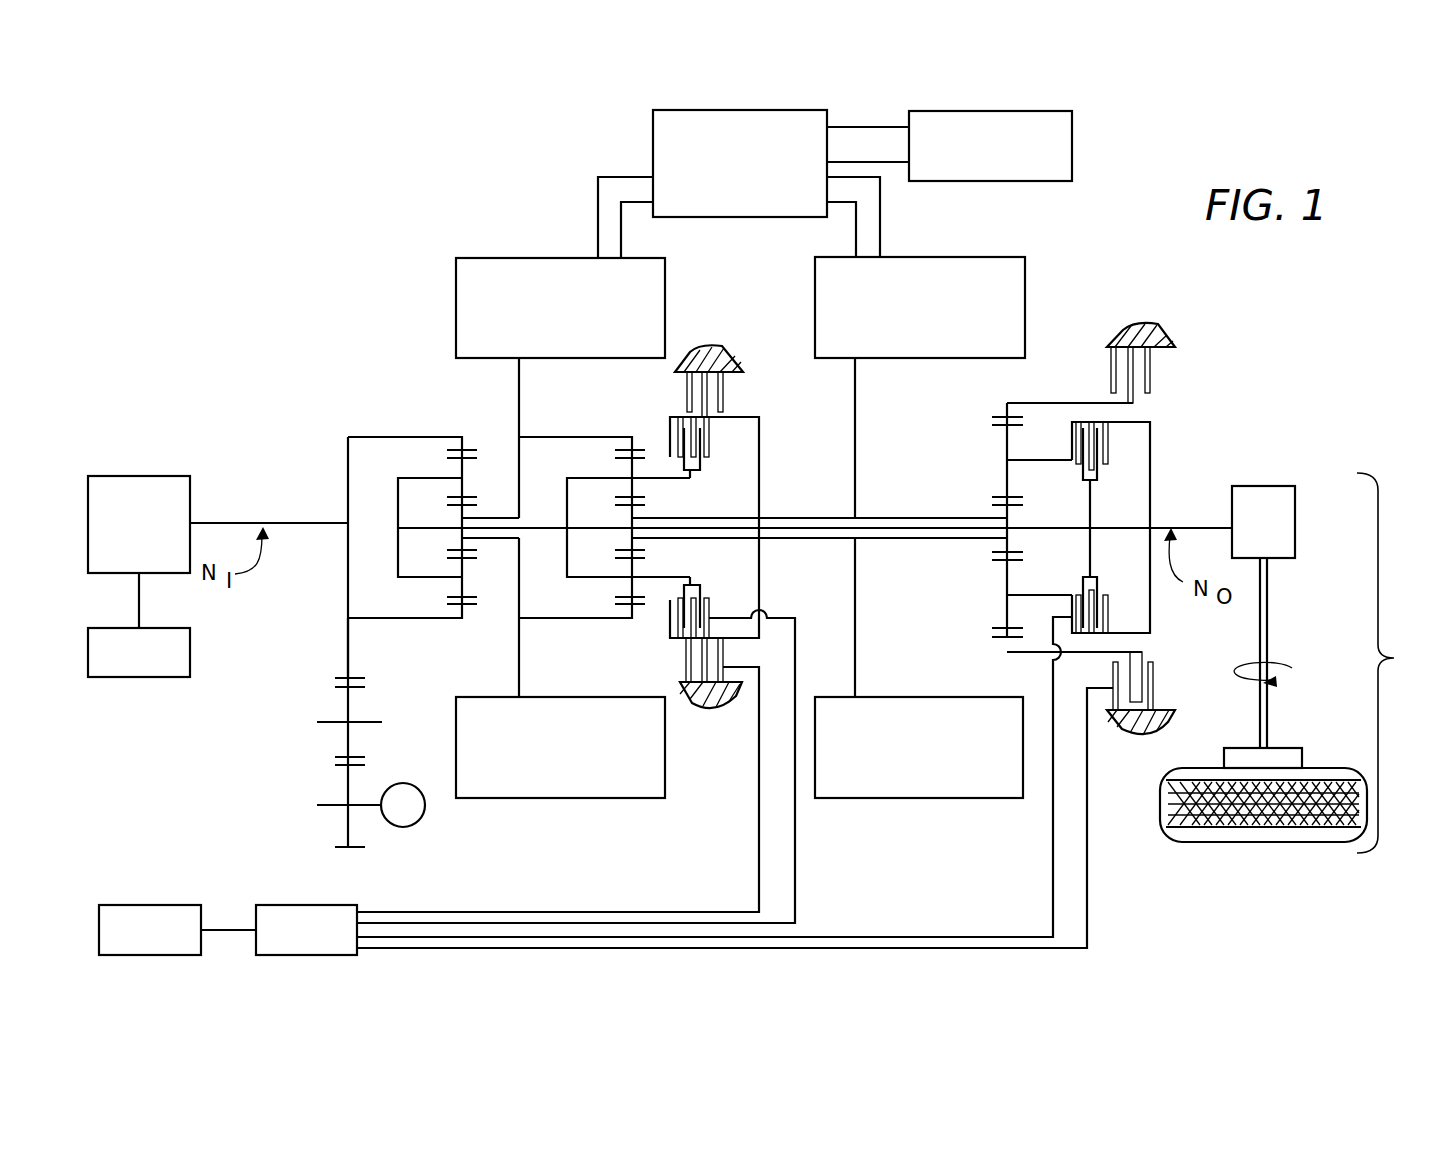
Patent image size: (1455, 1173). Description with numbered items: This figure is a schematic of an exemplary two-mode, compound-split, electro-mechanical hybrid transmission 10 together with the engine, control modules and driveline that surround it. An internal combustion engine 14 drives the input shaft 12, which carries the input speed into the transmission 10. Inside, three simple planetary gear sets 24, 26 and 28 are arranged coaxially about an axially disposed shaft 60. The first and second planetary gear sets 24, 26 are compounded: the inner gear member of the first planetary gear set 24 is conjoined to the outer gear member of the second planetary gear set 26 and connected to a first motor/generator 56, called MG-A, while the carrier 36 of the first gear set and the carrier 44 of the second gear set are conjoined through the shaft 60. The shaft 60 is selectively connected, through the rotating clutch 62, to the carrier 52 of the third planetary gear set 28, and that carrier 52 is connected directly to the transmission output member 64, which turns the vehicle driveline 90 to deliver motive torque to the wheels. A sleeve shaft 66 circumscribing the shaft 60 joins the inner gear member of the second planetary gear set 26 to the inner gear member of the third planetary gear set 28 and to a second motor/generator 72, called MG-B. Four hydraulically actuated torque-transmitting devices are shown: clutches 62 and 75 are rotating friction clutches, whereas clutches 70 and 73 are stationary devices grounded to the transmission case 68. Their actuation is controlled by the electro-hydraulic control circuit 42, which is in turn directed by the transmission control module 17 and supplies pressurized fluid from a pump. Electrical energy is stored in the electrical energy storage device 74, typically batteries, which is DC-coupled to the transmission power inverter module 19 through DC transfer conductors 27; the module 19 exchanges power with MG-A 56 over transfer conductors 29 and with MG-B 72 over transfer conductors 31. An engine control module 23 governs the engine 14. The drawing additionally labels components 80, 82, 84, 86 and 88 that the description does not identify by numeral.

The transmission 10 is at (406, 212).
The input shaft 12 is at (307, 523).
The engine 14 is at (145, 476).
The transmission control module 17 is at (140, 905).
The transmission power inverter module 19 is at (653, 126).
The engine control module 23 is at (185, 668).
The first planetary gear set 24 is at (455, 422).
The second planetary gear set 26 is at (627, 422).
The DC transfer conductors 27 is at (840, 127).
The third planetary gear set 28 is at (994, 404).
The transfer conductors 29 is at (598, 215).
The transfer conductors 31 is at (880, 215).
The carrier 36 is at (398, 550).
The electro-hydraulic control system 42 is at (270, 905).
The carrier 44 is at (567, 553).
The carrier 52 is at (1150, 432).
The motor/generator MG-A 56 is at (456, 295).
The shaft 60 is at (828, 527).
The clutch C2 62 is at (1130, 456).
The transmission output member 64 is at (1203, 522).
The sleeve shaft 66 is at (800, 517).
The transmission case 68 is at (705, 350).
The clutch C1 70 is at (1100, 352).
The motor/generator MG-B 72 is at (1025, 277).
The clutch C3 73 is at (740, 392).
The electrical energy storage device 74 is at (1072, 132).
The clutch C4 75 is at (718, 462).
The ring gear member 80 is at (348, 578).
The transfer gear 82 is at (347, 712).
The transfer gear 84 is at (347, 823).
The shaft 86 is at (368, 810).
The hydraulic pump 88 is at (412, 826).
The vehicle driveline 90 is at (1396, 658).